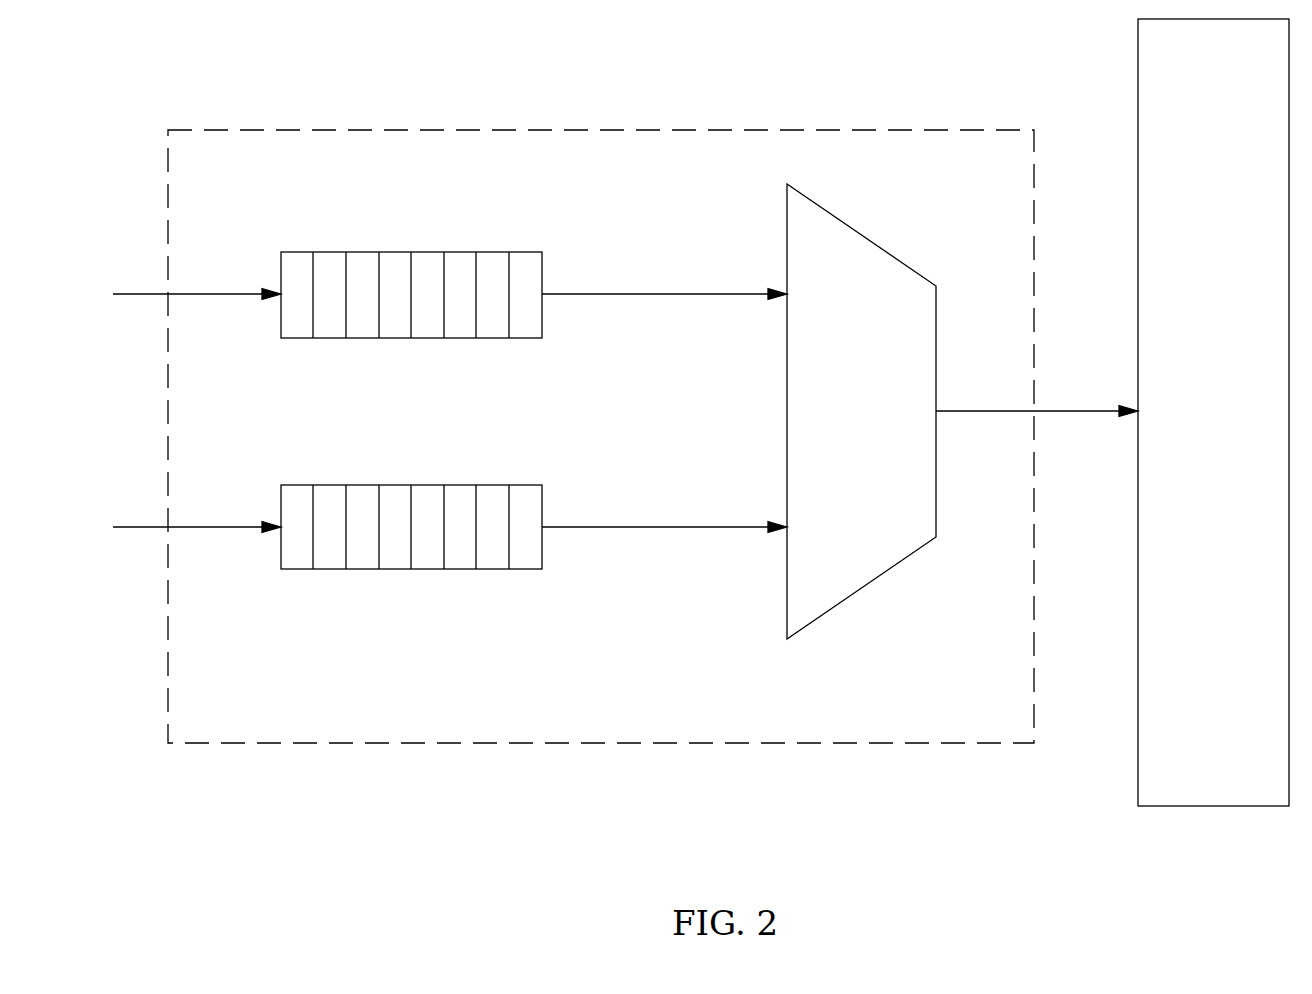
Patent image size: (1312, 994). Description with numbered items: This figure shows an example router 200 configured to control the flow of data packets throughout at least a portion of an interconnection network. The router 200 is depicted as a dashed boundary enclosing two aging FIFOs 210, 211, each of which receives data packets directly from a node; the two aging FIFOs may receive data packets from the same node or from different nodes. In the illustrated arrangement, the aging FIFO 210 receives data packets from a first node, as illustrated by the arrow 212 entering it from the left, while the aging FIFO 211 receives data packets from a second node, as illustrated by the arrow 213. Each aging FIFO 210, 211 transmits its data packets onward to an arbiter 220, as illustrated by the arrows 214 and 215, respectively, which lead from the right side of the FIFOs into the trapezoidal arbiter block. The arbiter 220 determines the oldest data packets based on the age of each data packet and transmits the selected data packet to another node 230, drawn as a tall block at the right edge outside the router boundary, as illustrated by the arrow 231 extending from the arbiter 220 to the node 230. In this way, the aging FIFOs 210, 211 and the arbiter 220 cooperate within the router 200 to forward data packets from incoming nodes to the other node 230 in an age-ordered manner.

The router 200 is at (532, 129).
The aging FIFO 210 is at (386, 484).
The aging FIFO 211 is at (377, 251).
The arrow 212 is at (270, 523).
The arrow 213 is at (263, 290).
The arrow 214 is at (687, 525).
The arrow 215 is at (694, 293).
The arbiter 220 is at (786, 238).
The node 230 is at (1137, 70).
The arrow 231 is at (1128, 408).